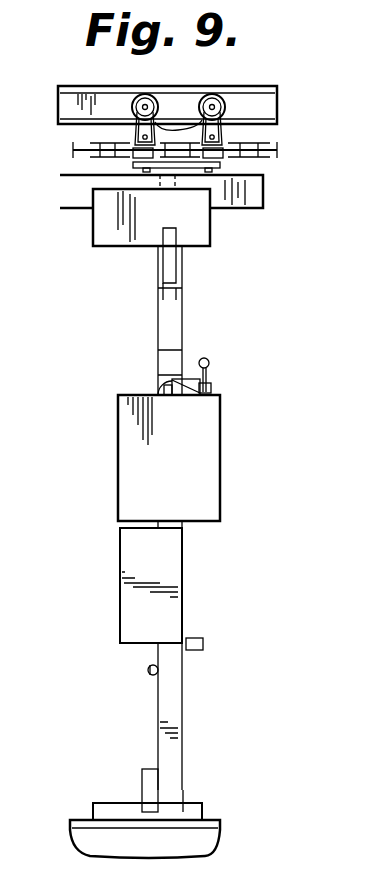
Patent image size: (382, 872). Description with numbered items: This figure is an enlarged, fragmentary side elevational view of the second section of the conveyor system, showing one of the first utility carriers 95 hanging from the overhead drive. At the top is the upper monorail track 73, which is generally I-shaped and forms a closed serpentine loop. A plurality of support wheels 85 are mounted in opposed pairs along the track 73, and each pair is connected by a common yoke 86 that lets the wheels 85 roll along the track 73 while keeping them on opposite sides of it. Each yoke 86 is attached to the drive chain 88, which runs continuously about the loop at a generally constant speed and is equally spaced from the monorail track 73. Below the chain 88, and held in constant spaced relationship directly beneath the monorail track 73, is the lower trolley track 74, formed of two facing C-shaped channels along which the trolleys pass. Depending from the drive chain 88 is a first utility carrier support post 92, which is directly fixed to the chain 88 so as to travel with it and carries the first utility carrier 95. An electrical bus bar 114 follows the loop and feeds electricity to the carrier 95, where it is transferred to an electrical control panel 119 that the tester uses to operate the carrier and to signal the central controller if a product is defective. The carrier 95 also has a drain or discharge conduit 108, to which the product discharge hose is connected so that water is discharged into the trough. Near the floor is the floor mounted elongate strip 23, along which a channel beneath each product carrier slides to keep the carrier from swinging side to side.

The upper monorail track 73 is at (71, 92).
The support wheels 85 is at (134, 96).
The yoke 86 is at (176, 128).
The drive chain 88 is at (274, 149).
The lower trolley track 74 is at (233, 209).
The electrical bus bar 114 is at (108, 240).
The first utility carrier support posts 92 is at (183, 270).
The electrical control panel 119 is at (221, 438).
The first utility carrier 95 is at (173, 710).
The discharge conduit 108 is at (148, 670).
The floor mounted elongate strip 23 is at (190, 806).